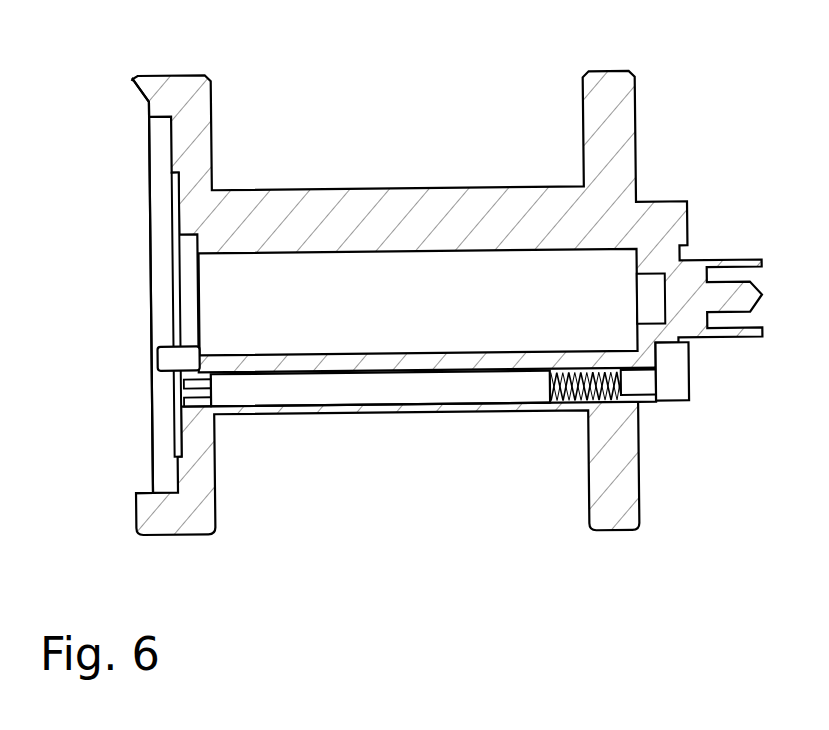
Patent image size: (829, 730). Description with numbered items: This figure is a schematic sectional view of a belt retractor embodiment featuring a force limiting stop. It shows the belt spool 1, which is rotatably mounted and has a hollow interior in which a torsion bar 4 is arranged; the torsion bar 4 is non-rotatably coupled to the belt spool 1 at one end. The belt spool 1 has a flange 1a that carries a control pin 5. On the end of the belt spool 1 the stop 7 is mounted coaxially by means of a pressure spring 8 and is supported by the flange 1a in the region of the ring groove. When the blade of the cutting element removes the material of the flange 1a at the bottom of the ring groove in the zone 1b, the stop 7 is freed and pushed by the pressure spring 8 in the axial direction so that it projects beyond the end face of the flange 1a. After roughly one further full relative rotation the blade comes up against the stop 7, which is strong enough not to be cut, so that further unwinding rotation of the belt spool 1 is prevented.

The belt spool 1 is at (398, 193).
The flange 1a is at (137, 110).
The zone 1b is at (184, 395).
The torsion bar 4 is at (681, 374).
The control pin 5 is at (162, 352).
The force limiting stop 7 is at (292, 402).
The pressure spring 8 is at (556, 402).